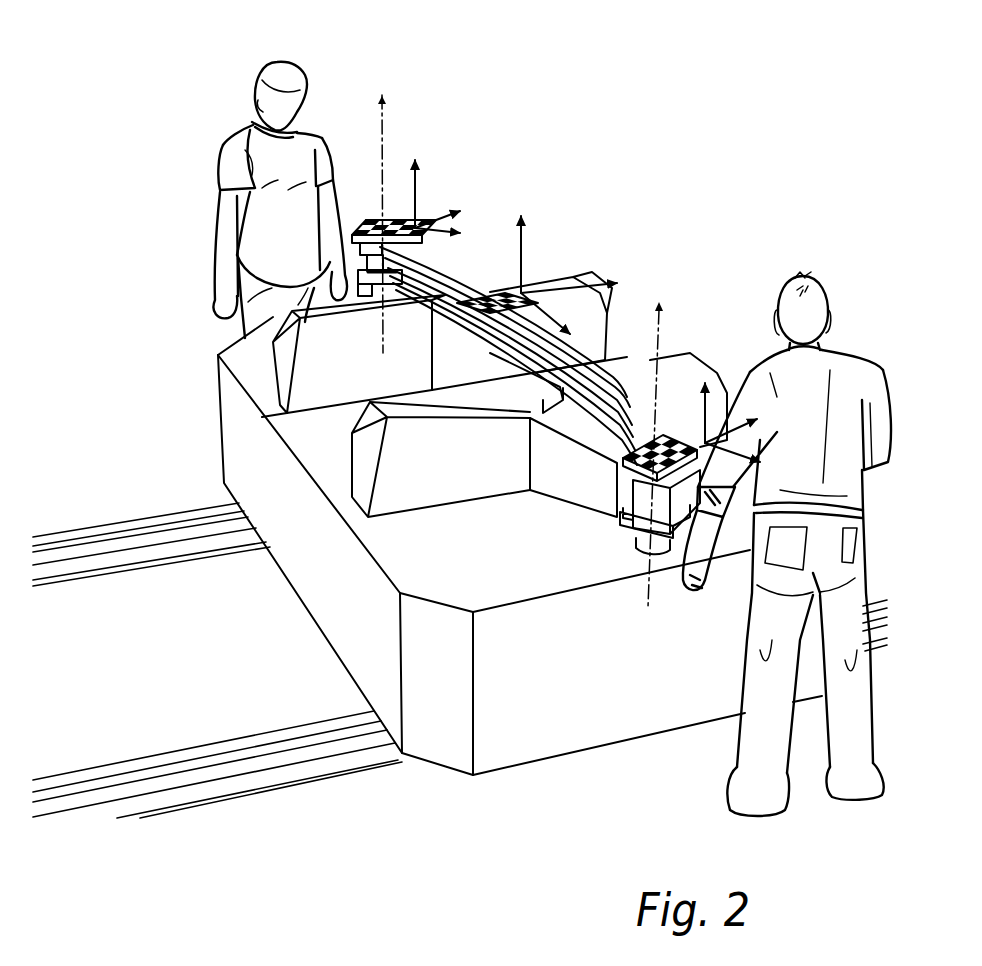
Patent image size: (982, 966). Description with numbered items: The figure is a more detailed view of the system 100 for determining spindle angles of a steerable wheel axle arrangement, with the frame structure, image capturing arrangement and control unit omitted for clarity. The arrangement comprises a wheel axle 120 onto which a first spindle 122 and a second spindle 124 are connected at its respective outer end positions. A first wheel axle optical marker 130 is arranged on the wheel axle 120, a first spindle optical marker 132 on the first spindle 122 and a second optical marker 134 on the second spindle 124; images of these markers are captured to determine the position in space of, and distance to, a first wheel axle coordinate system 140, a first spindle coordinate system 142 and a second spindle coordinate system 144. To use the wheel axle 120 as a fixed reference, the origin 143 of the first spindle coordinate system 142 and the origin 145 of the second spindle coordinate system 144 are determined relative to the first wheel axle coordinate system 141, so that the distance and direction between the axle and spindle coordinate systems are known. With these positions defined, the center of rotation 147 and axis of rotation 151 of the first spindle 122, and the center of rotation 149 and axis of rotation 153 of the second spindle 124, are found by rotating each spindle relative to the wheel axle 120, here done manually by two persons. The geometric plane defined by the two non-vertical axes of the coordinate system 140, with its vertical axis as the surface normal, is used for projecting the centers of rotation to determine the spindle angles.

The system 100 is at (634, 106).
The wheel axle 120 is at (507, 350).
The first spindle 122 is at (364, 248).
The second spindle 124 is at (623, 513).
The first wheel axle optical marker 130 is at (430, 330).
The first spindle optical marker 132 is at (383, 230).
The second optical marker 134 is at (668, 525).
The first wheel axle coordinate system 140 is at (540, 268).
The first wheel axle coordinate system 141 is at (510, 292).
The first spindle coordinate system 142 is at (446, 146).
The origin of the first spindle coordinate system 143 is at (422, 227).
The second spindle coordinate system 144 is at (738, 392).
The origin of the second spindle coordinate system 145 is at (697, 440).
The center of rotation 147 is at (385, 220).
The center of rotation 149 is at (620, 463).
The axis of rotation 151 is at (388, 124).
The axis of rotation 153 is at (668, 335).